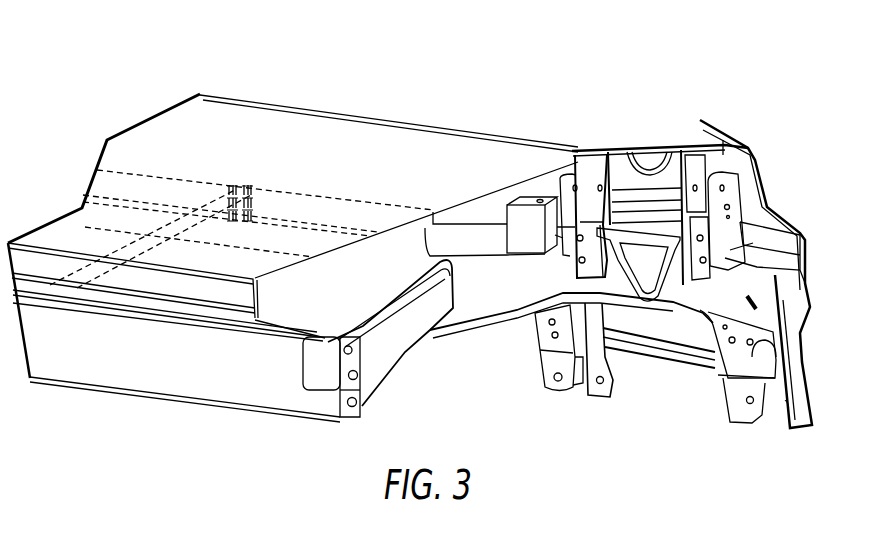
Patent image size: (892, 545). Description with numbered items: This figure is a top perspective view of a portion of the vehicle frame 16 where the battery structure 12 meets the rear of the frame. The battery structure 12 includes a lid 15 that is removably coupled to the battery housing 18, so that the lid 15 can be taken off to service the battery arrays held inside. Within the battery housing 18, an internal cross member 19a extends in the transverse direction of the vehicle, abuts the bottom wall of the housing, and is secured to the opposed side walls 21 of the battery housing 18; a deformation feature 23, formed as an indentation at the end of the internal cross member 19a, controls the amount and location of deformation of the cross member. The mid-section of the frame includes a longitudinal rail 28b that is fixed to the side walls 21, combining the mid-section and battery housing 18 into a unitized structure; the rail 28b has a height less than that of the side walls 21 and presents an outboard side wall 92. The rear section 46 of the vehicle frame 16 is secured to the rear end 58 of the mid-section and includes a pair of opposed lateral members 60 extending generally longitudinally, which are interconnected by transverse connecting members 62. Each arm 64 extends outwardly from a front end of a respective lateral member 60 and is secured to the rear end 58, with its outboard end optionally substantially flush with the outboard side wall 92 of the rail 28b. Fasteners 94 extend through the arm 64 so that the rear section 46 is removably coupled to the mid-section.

The battery structure 12 is at (447, 150).
The lid 15 is at (368, 152).
The vehicle frame 16 is at (92, 396).
The battery housing 18 is at (528, 133).
The internal cross member 19a is at (193, 195).
The side wall 21 is at (86, 250).
The deformation feature 23 is at (240, 187).
The longitudinal rail 28b is at (140, 384).
The rear section 46 is at (665, 445).
The rear end 58 is at (293, 430).
The lateral member 60 is at (733, 295).
The connecting member 62 is at (627, 357).
The arm 64 is at (400, 330).
The outboard side wall 92 is at (227, 380).
The fastener 94 is at (358, 375).